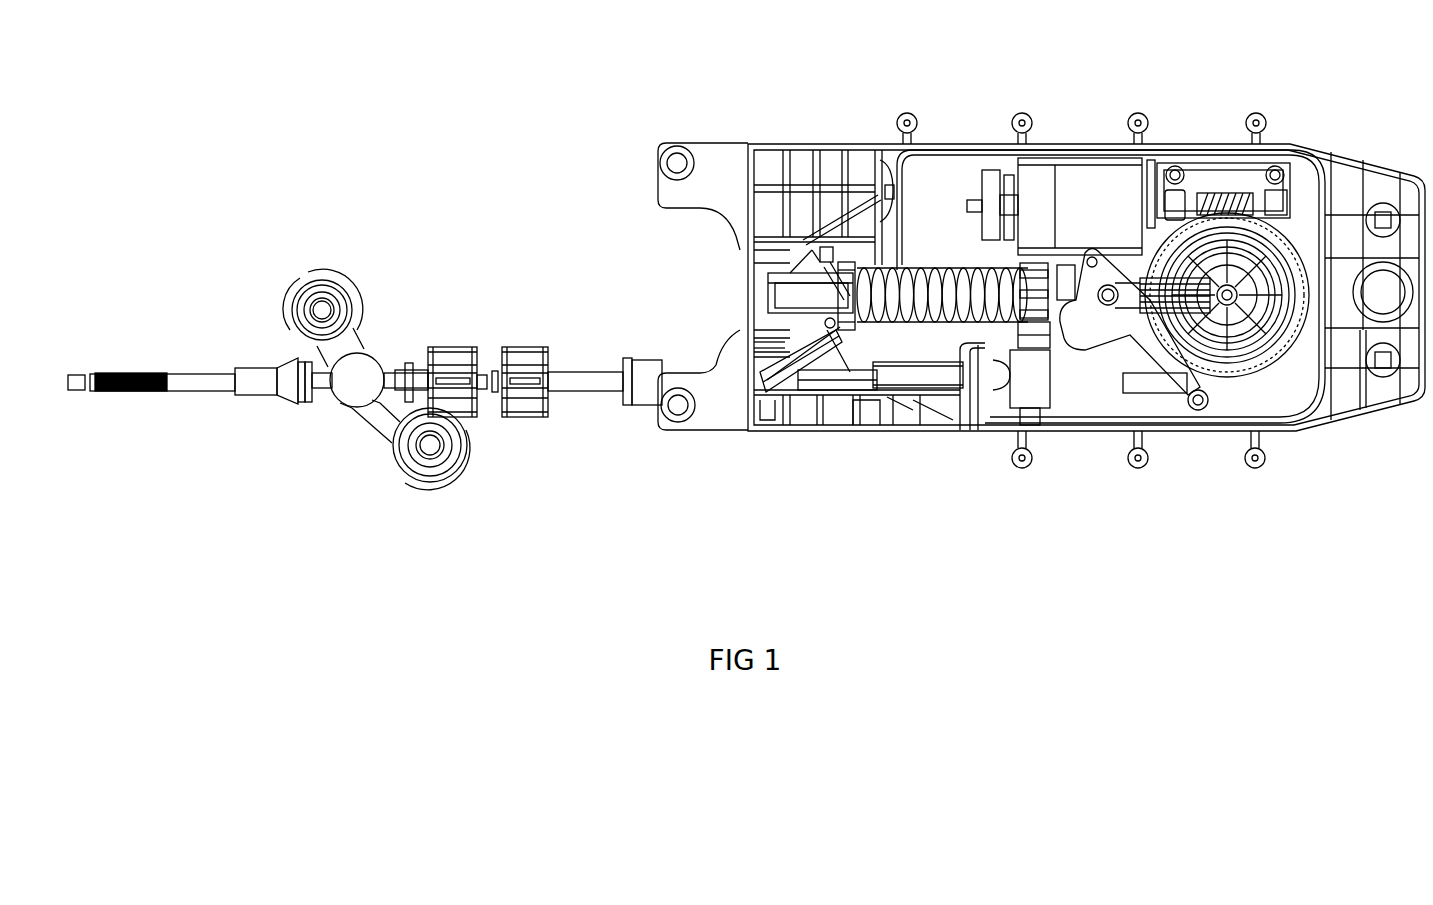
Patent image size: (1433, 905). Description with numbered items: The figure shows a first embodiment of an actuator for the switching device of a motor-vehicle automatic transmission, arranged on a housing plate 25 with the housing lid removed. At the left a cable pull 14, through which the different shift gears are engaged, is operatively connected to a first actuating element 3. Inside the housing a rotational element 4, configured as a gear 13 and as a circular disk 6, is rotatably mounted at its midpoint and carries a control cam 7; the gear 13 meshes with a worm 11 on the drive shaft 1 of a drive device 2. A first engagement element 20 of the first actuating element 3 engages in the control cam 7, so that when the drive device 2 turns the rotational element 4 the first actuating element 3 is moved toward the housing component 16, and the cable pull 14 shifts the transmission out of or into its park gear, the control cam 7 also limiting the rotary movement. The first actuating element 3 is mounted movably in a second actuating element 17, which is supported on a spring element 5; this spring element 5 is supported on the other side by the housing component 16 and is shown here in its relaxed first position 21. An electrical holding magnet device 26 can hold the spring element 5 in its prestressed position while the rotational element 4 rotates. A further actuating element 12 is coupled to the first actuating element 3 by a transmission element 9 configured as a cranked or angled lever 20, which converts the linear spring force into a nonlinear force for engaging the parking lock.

The drive shaft 1 is at (1163, 200).
The drive device 2 is at (1090, 200).
The first actuating element 3 is at (781, 300).
The rotational element 4 is at (1257, 313).
The spring element 5 is at (928, 278).
The circular disk 6 is at (1227, 295).
The control cam 7 is at (1255, 327).
The transmission element 9 is at (787, 353).
The worm 11 is at (1223, 197).
The further actuating element 12 is at (847, 378).
The gear 13 is at (1227, 295).
The cable pull 14 is at (562, 378).
The housing component 16 is at (850, 267).
The second actuating element 17 is at (1040, 267).
The lever 20 is at (801, 359).
The first position 21 is at (728, 302).
The housing plate 25 is at (1363, 407).
The holding magnet device 26 is at (1038, 405).